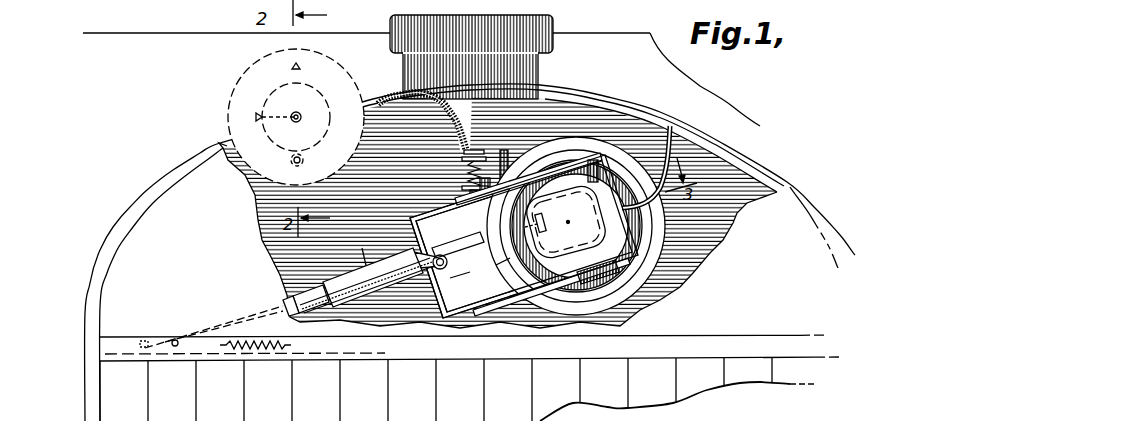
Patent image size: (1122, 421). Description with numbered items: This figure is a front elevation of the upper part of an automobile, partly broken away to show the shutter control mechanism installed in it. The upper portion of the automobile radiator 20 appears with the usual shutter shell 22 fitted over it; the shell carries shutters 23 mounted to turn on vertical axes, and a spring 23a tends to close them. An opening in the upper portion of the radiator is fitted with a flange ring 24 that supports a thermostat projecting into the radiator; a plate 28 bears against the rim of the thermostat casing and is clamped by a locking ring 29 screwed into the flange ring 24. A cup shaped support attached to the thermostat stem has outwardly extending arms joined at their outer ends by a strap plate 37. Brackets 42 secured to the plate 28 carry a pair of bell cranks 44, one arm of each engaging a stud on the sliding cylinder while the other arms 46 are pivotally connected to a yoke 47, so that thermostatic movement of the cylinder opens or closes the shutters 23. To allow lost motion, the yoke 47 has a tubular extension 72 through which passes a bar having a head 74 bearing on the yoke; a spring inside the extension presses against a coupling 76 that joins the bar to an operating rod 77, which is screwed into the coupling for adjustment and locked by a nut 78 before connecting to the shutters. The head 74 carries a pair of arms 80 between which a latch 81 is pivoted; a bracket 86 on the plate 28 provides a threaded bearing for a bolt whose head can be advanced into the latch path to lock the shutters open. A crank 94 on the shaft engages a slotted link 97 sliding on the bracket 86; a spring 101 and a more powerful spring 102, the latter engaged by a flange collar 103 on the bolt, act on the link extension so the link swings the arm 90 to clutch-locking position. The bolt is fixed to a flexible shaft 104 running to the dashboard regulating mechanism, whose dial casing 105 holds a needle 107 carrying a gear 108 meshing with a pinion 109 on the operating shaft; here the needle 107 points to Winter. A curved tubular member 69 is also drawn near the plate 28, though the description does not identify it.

The automobile radiator 20 is at (728, 170).
The shutter shell 22 is at (784, 186).
The shutters 23 is at (666, 374).
The spring 23a is at (260, 348).
The flange ring 24 is at (623, 157).
The plate 28 is at (630, 221).
The locking ring 29 is at (570, 148).
The strap plate 37 is at (566, 222).
The brackets 42 is at (594, 158).
The bell cranks 44 is at (583, 147).
The arms of the bell cranks 46 is at (537, 150).
The yoke 47 is at (417, 216).
The curved tube 69 is at (671, 125).
The tubular extension 72 is at (420, 275).
The head 74 is at (468, 275).
The coupling 76 is at (307, 298).
The operating rod 77 is at (288, 308).
The nut 78 is at (290, 313).
The arms 80 is at (447, 264).
The latch 81 is at (460, 246).
The bracket 86 is at (507, 260).
The arm 90 is at (546, 230).
The crank 94 is at (541, 222).
The link 97 is at (496, 172).
The spring 101 is at (462, 214).
The spring 102 is at (467, 163).
The flange collar 103 is at (476, 150).
The flexible shaft 104 is at (458, 137).
The dial casing 105 is at (230, 73).
The needle 107 is at (292, 114).
The gear 108 is at (333, 98).
The pinion 109 is at (291, 161).